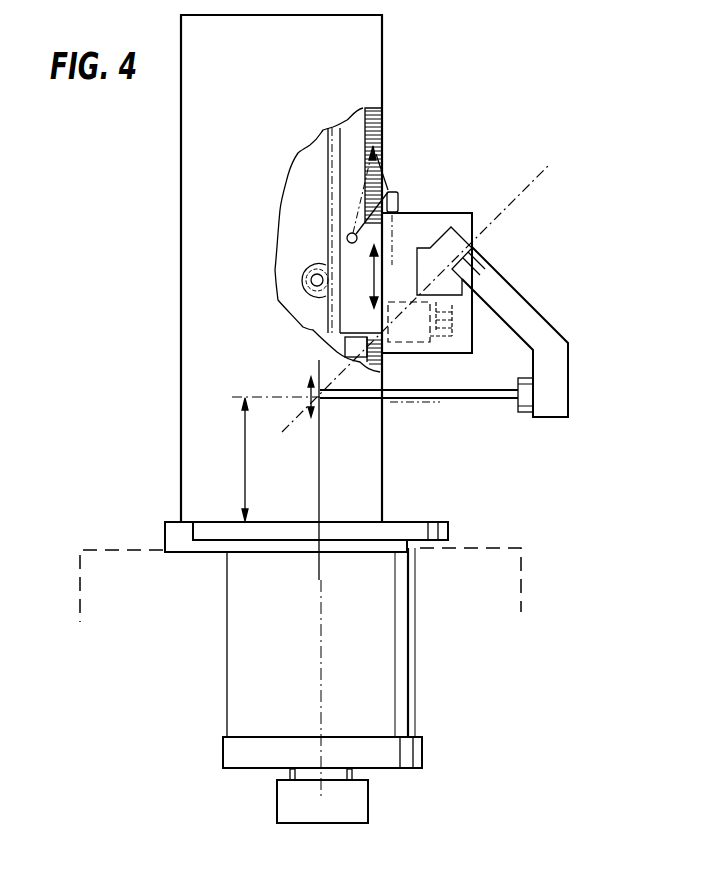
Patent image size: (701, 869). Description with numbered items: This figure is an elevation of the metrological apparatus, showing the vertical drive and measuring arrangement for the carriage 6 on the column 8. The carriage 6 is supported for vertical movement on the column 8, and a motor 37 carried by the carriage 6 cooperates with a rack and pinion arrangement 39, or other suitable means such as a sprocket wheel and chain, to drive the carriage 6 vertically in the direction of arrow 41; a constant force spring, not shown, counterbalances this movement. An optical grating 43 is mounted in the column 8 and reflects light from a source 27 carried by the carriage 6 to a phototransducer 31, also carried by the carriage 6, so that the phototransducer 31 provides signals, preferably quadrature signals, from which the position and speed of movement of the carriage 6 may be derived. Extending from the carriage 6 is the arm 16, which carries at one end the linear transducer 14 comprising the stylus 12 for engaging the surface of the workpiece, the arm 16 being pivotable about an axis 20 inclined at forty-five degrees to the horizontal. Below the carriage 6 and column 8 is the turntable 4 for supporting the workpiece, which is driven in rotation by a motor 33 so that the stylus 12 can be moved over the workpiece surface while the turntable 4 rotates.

The turntable 4 is at (417, 527).
The carriage 6 is at (445, 217).
The column 8 is at (370, 63).
The stylus 12 is at (400, 401).
The linear transducer 14 is at (523, 398).
The arm 16 is at (515, 310).
The axis 20 is at (490, 223).
The light source 27 is at (347, 236).
The phototransducer 31 is at (398, 198).
The motor 33 is at (300, 797).
The motor 37 is at (302, 292).
The rack and pinion arrangement 39 is at (302, 260).
The arrow 41 is at (370, 282).
The optical grating 43 is at (384, 128).